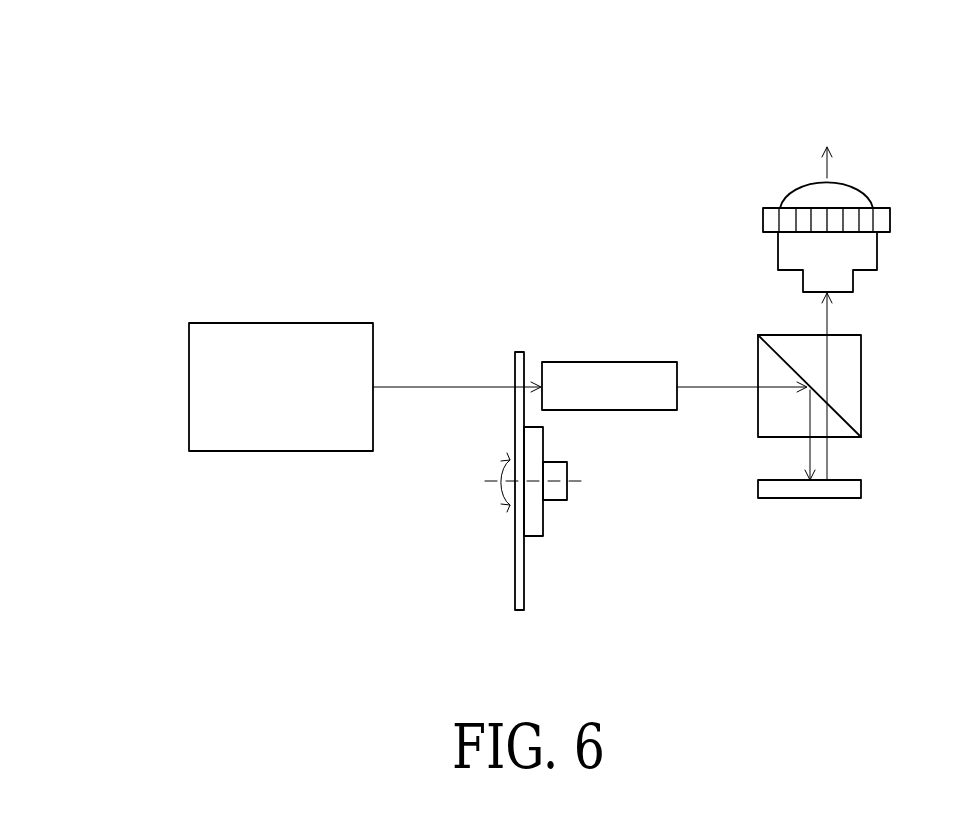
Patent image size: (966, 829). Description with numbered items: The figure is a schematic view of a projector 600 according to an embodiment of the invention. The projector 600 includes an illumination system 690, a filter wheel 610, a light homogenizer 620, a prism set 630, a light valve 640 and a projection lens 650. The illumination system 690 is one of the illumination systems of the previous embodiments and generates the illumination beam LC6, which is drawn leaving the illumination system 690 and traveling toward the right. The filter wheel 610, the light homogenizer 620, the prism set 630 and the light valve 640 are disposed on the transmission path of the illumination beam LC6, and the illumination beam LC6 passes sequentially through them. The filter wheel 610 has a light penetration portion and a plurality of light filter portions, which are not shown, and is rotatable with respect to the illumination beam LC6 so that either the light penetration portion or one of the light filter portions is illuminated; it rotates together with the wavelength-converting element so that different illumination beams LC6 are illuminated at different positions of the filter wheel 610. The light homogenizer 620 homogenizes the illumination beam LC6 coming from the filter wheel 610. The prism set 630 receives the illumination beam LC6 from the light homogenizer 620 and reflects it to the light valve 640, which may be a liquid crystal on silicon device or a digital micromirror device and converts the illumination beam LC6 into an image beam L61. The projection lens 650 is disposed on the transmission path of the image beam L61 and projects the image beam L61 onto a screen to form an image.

The projector 600 is at (73, 54).
The illumination system 690 is at (298, 402).
The filter wheel 610 is at (518, 360).
The light homogenizer 620 is at (628, 402).
The prism set 630 is at (840, 383).
The light valve 640 is at (850, 488).
The projection lens 650 is at (862, 248).
The illumination beam LC6 is at (433, 389).
The image beam L61 is at (827, 168).